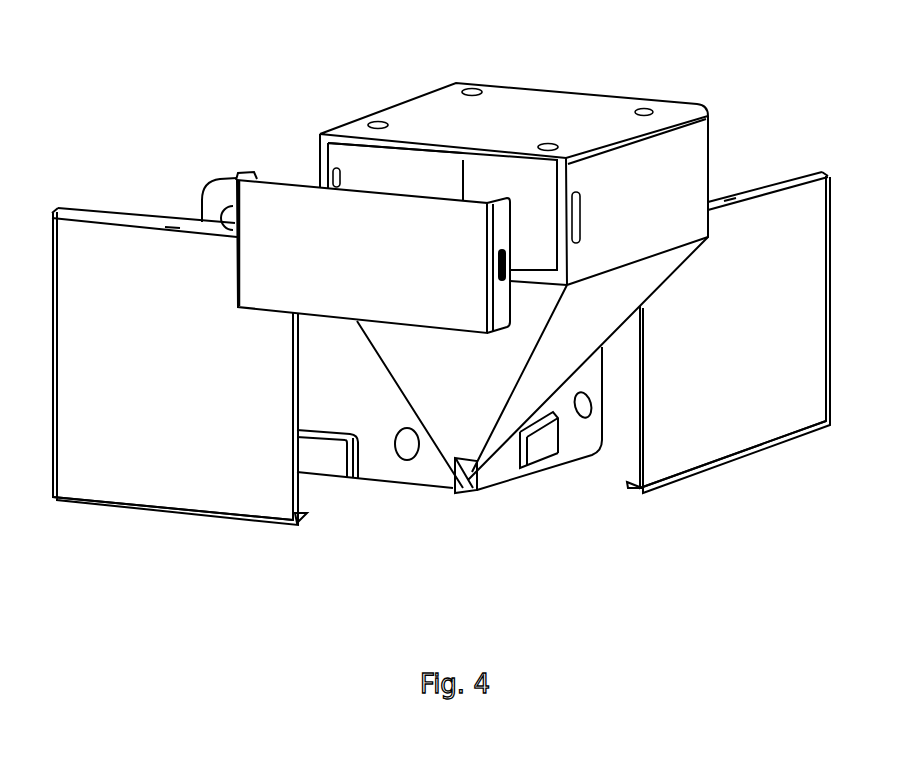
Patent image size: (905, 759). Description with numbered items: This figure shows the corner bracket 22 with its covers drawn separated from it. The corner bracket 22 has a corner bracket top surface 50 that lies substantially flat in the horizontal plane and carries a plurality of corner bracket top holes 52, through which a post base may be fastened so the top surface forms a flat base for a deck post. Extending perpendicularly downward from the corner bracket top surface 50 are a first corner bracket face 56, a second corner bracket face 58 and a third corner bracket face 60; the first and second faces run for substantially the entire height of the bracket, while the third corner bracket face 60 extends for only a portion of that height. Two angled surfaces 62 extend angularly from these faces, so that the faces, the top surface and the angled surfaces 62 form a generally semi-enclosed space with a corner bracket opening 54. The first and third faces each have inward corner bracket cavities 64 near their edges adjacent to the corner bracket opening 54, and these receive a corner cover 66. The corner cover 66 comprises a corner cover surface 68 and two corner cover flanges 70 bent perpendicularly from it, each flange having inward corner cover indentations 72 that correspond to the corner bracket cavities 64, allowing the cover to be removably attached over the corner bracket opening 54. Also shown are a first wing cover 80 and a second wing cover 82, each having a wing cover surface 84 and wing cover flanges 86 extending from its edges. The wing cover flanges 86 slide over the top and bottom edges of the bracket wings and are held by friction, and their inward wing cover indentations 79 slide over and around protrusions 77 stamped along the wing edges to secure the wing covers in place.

The corner bracket 22 is at (698, 87).
The corner bracket top surface 50 is at (542, 105).
The corner bracket top holes 52 is at (378, 120).
The corner bracket opening 54 is at (483, 182).
The first corner bracket face 56 is at (350, 160).
The second corner bracket face 58 is at (514, 93).
The third corner bracket face 60 is at (680, 158).
The angled surfaces 62 is at (650, 282).
The corner bracket cavities 64 is at (328, 180).
The corner cover 66 is at (260, 208).
The corner cover surface 68 is at (267, 285).
The corner cover flanges 70 is at (246, 172).
The corner cover indentations 72 is at (500, 266).
The protrusions 77 is at (328, 438).
The wing cover indentations 79 is at (170, 236).
The first wing cover 80 is at (175, 538).
The second wing cover 82 is at (793, 448).
The wing cover surface 84 is at (125, 455).
The wing cover flanges 86 is at (118, 207).